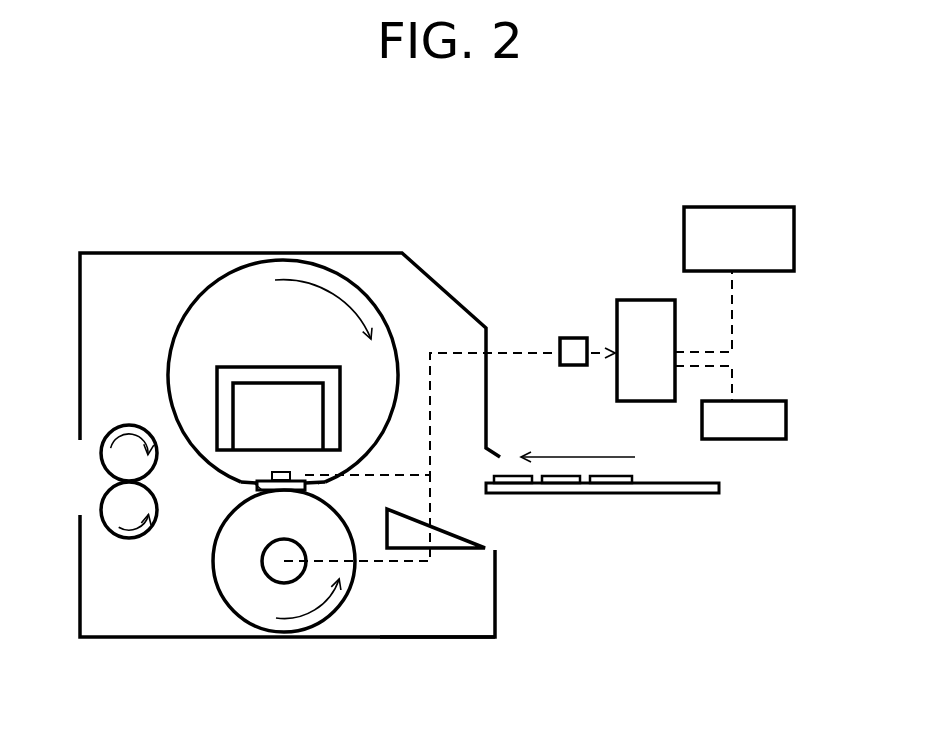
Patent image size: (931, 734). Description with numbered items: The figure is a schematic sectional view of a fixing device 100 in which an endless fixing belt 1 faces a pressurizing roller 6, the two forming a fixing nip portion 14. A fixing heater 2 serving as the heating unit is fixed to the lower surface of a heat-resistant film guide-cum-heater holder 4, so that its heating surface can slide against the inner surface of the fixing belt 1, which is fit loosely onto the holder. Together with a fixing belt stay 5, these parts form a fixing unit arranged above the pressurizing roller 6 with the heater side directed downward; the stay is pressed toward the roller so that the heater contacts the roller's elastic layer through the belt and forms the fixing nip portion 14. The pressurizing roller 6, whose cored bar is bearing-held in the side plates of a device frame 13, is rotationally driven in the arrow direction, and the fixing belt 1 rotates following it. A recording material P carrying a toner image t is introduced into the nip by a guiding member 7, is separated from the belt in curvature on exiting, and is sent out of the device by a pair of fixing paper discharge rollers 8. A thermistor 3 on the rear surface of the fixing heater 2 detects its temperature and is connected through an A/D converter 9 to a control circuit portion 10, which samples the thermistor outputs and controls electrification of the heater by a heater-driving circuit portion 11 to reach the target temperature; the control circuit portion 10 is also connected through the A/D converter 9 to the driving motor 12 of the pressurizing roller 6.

The fixing device 100 is at (148, 232).
The fixing belt 1 is at (391, 334).
The fixing heater 2 is at (305, 489).
The thermistor 3 is at (277, 471).
The film guide-cum-heater holder 4 is at (323, 482).
The fixing belt stay 5 is at (242, 384).
The pressurizing roller 6 is at (347, 590).
The guiding member 7 is at (445, 543).
The fixing paper discharge rollers 8 is at (113, 524).
The A/D converter 9 is at (572, 343).
The control circuit portion (CPU) 10 is at (645, 316).
The heater-driving circuit portion 11 is at (738, 226).
The driving motor 12 is at (768, 412).
The device frame 13 is at (441, 640).
The fixing nip portion 14 is at (257, 487).
The toner image t is at (622, 477).
The recording material P is at (676, 494).